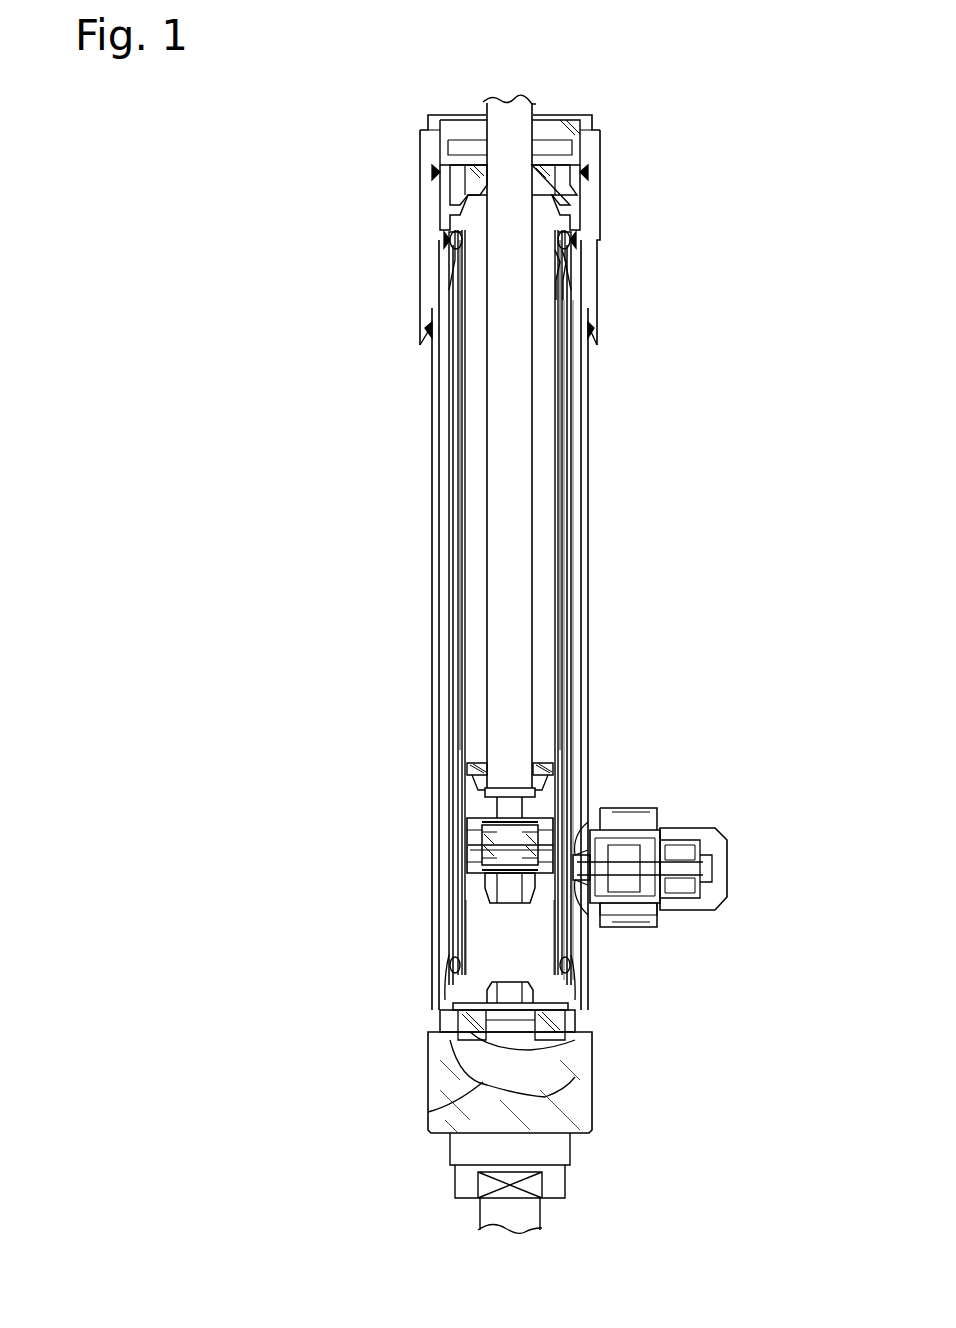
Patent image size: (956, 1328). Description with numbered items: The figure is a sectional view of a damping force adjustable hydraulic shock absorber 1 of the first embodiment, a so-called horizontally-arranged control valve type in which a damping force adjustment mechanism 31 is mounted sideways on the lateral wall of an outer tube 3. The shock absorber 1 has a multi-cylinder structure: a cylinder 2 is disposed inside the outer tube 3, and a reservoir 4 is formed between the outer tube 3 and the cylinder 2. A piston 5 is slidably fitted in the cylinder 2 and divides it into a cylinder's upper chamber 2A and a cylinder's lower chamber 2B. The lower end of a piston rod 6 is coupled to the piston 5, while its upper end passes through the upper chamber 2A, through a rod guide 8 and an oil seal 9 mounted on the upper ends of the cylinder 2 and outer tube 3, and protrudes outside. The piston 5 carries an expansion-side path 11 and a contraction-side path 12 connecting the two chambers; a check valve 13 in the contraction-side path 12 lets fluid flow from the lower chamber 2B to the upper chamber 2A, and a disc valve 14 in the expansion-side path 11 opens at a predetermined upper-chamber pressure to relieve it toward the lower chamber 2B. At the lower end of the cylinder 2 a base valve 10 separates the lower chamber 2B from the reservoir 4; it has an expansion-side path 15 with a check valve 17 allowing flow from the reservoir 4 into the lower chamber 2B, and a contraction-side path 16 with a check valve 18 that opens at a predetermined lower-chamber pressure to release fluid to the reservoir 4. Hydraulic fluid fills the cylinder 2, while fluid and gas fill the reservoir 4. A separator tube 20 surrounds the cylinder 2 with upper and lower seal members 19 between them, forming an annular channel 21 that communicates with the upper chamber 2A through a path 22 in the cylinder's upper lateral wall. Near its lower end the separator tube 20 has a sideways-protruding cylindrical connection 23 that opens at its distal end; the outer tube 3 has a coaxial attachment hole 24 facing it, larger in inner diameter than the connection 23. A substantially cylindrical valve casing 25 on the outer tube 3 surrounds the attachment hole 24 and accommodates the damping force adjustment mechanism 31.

The shock absorber 1 is at (728, 182).
The cylinder 2 is at (462, 460).
The cylinder's upper chamber 2A is at (475, 415).
The cylinder's lower chamber 2B is at (487, 935).
The outer tube 3 is at (432, 508).
The reservoir 4 is at (583, 455).
The piston 5 is at (468, 860).
The piston rod 6 is at (497, 383).
The rod guide 8 is at (590, 195).
The oil seal 9 is at (470, 178).
The base valve 10 is at (470, 1012).
The expansion-side path 11 is at (478, 832).
The contraction-side path 12 is at (553, 845).
The check valve 13 is at (543, 830).
The disc valve 14 is at (490, 872).
The expansion-side path 15 is at (470, 1042).
The contraction-side path 16 is at (480, 1085).
The check valve 17 is at (462, 995).
The check valve 18 is at (560, 1052).
The seal member 19 is at (462, 236).
The separator tube 20 is at (572, 500).
The annular channel 21 is at (565, 545).
The path 22 is at (555, 290).
The connection 23 is at (580, 858).
The attachment hole 24 is at (590, 950).
The valve casing 25 is at (620, 925).
The damping force adjustment mechanism 31 is at (690, 824).